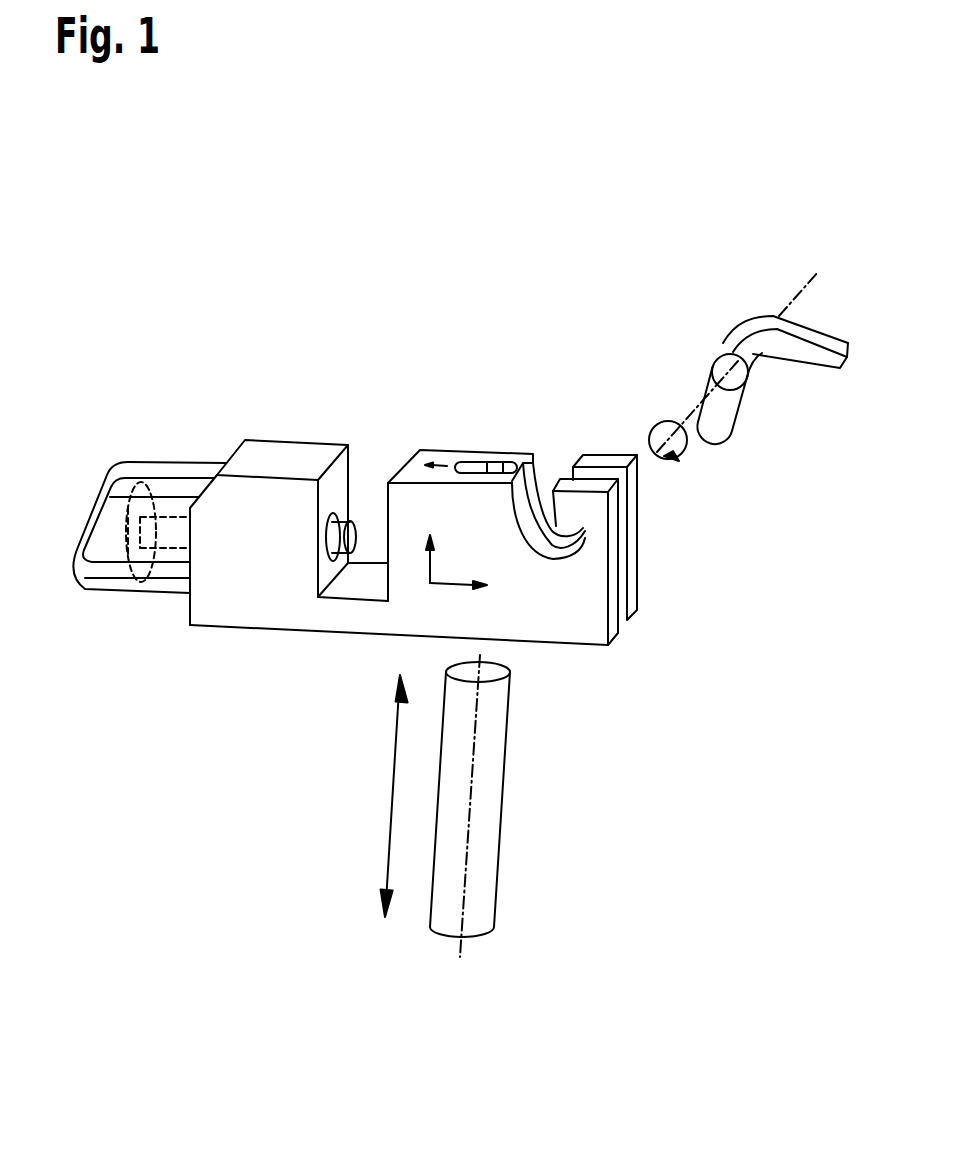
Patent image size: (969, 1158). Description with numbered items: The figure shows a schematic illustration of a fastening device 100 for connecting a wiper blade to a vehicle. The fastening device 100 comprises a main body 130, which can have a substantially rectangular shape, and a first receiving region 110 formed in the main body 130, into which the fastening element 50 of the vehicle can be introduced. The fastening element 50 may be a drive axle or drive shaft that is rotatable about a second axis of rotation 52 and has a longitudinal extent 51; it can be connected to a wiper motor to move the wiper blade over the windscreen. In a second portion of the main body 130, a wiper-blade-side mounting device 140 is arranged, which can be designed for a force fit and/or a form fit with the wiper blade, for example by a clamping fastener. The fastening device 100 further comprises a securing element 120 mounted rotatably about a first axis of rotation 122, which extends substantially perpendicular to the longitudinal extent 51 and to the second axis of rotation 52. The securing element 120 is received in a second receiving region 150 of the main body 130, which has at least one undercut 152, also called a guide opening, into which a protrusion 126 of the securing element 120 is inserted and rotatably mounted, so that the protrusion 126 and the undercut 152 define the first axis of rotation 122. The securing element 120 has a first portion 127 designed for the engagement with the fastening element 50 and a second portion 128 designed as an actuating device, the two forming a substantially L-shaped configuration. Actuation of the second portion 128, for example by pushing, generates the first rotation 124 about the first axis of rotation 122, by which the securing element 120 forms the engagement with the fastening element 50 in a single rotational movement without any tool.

The fastening device 100 is at (410, 322).
The first receiving region 110 is at (478, 468).
The securing element 120 is at (683, 305).
The first axis of rotation 122 is at (805, 283).
The first rotation 124 is at (677, 424).
The protrusion 126 is at (753, 378).
The first portion 127 is at (728, 425).
The second portion 128 is at (825, 338).
The main body 130 is at (588, 589).
The wiper-blade-side mounting device 140 is at (312, 420).
The second receiving region 150 is at (565, 445).
The undercut 152 is at (575, 551).
The fastening element 50 is at (502, 728).
The longitudinal extent 51 is at (392, 800).
The second axis of rotation 52 is at (462, 950).